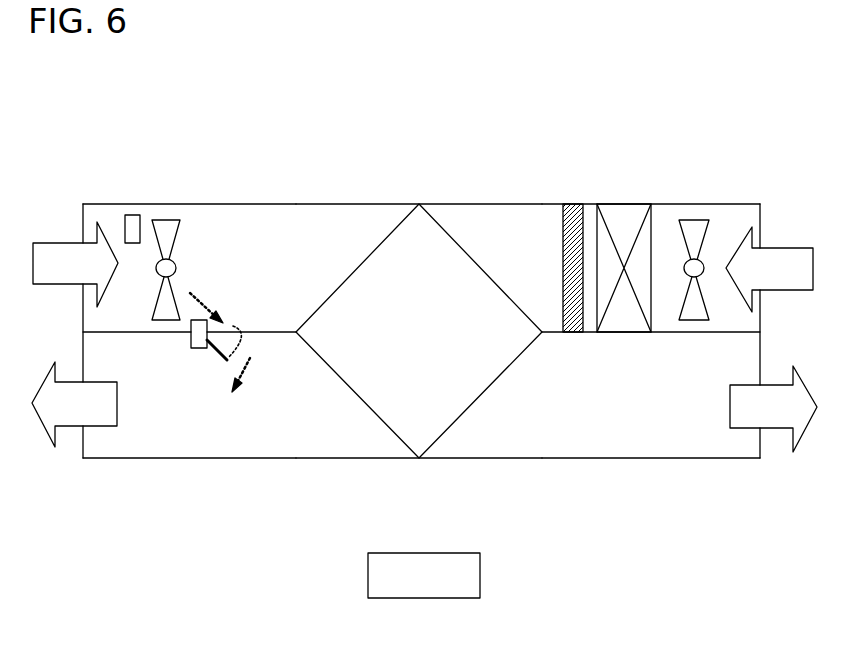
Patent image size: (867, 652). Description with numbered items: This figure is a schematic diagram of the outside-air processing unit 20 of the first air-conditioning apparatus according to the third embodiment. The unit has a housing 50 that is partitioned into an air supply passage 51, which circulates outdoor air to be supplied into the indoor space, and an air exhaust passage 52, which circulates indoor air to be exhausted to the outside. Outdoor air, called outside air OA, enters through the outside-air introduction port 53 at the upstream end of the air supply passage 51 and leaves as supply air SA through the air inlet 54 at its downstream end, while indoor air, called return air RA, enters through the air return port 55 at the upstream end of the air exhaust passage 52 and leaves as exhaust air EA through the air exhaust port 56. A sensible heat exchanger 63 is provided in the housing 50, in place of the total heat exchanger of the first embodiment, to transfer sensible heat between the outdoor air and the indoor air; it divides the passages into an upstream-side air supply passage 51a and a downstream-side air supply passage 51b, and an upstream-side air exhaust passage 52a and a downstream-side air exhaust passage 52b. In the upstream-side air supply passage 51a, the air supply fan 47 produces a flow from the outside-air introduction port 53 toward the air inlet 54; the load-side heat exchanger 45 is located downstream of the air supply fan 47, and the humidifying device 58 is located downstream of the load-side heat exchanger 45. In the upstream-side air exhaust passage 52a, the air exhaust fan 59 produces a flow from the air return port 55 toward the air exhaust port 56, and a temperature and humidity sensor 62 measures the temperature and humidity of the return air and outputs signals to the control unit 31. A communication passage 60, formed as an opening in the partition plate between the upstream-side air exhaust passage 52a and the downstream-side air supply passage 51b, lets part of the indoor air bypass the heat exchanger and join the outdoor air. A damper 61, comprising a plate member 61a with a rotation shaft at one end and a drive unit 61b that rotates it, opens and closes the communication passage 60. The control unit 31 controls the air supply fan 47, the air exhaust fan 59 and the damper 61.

The outside-air processing unit 20 is at (440, 134).
The control unit 31 is at (481, 576).
The load-side heat exchanger 45 is at (625, 212).
The air supply fan 47 is at (695, 220).
The housing 50 is at (320, 204).
The air supply passage 51 is at (478, 232).
The upstream-side air supply passage 51a is at (536, 232).
The downstream-side air supply passage 51b is at (332, 440).
The air exhaust passage 52 is at (502, 440).
The upstream-side air exhaust passage 52a is at (256, 232).
The downstream-side air exhaust passage 52b is at (562, 440).
The outside-air introduction port 53 is at (762, 236).
The air inlet 54 is at (82, 367).
The air return port 55 is at (82, 237).
The air exhaust port 56 is at (762, 363).
The humidifying device 58 is at (576, 210).
The air exhaust fan 59 is at (170, 218).
The communication passage 60 is at (244, 316).
The damper 61 is at (185, 507).
The plate member 61a is at (214, 350).
The drive unit 61b is at (195, 348).
The temperature and humidity sensor 62 is at (136, 210).
The sensible heat exchanger 63 is at (388, 237).